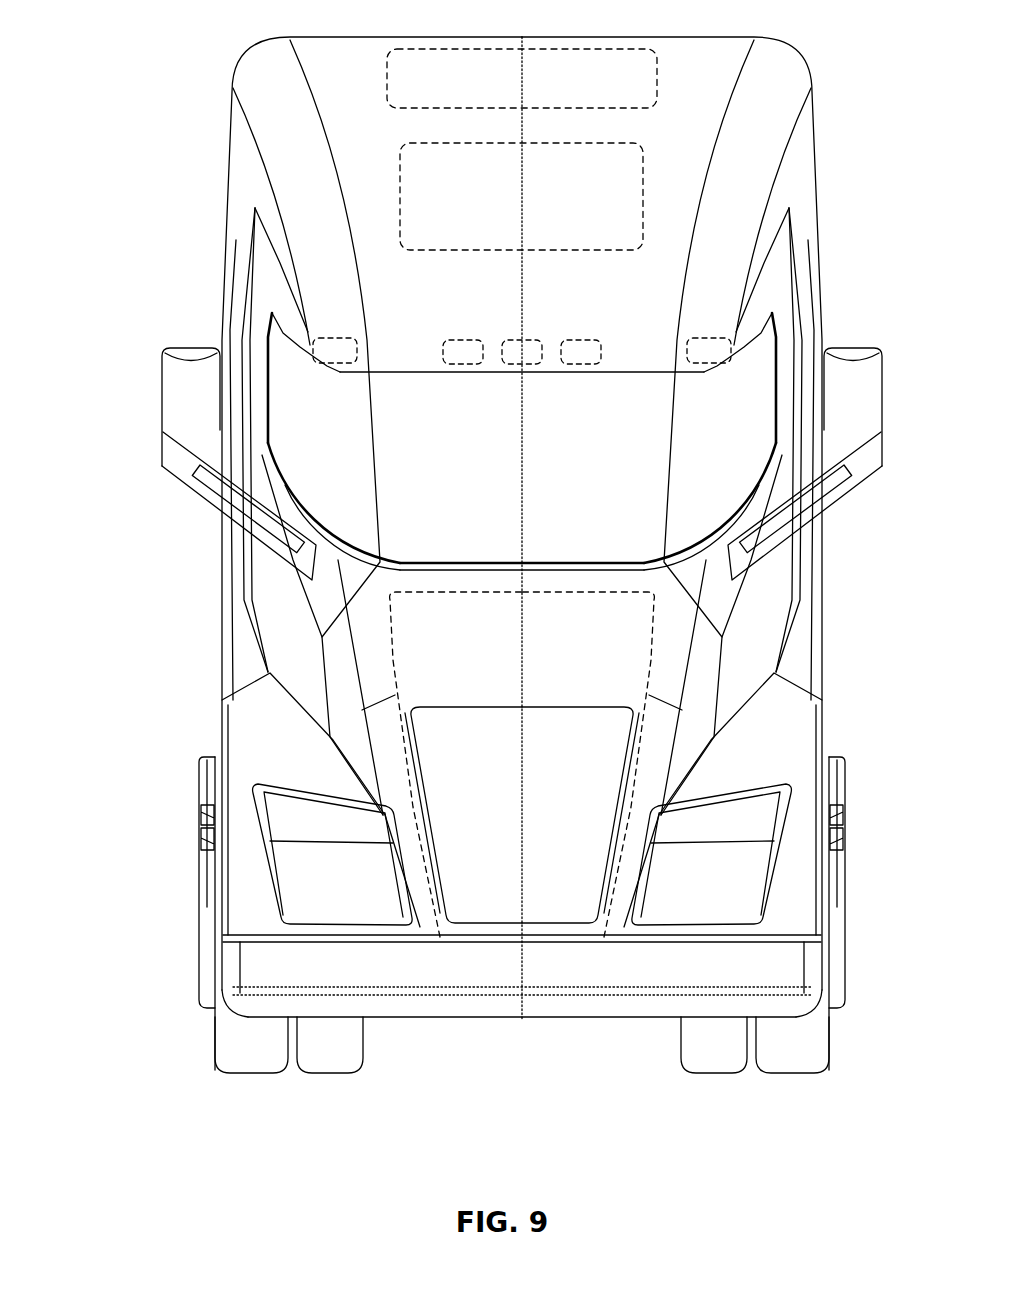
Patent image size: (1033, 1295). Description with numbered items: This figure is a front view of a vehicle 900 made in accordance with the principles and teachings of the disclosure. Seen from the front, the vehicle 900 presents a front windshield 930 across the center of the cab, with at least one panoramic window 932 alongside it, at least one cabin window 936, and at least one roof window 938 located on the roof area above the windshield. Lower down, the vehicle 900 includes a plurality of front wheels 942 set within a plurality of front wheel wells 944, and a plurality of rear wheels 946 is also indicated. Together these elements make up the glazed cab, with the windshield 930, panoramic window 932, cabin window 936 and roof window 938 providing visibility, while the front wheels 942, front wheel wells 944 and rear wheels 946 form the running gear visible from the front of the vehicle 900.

The vehicle 900 is at (155, 67).
The roof window 938 is at (525, 90).
The cabin window 936 is at (237, 295).
The panoramic window 932 is at (305, 431).
The front windshield 930 is at (445, 480).
The front wheel wells 944 is at (288, 753).
The rear wheels 946 is at (205, 970).
The front wheels 942 is at (255, 1053).